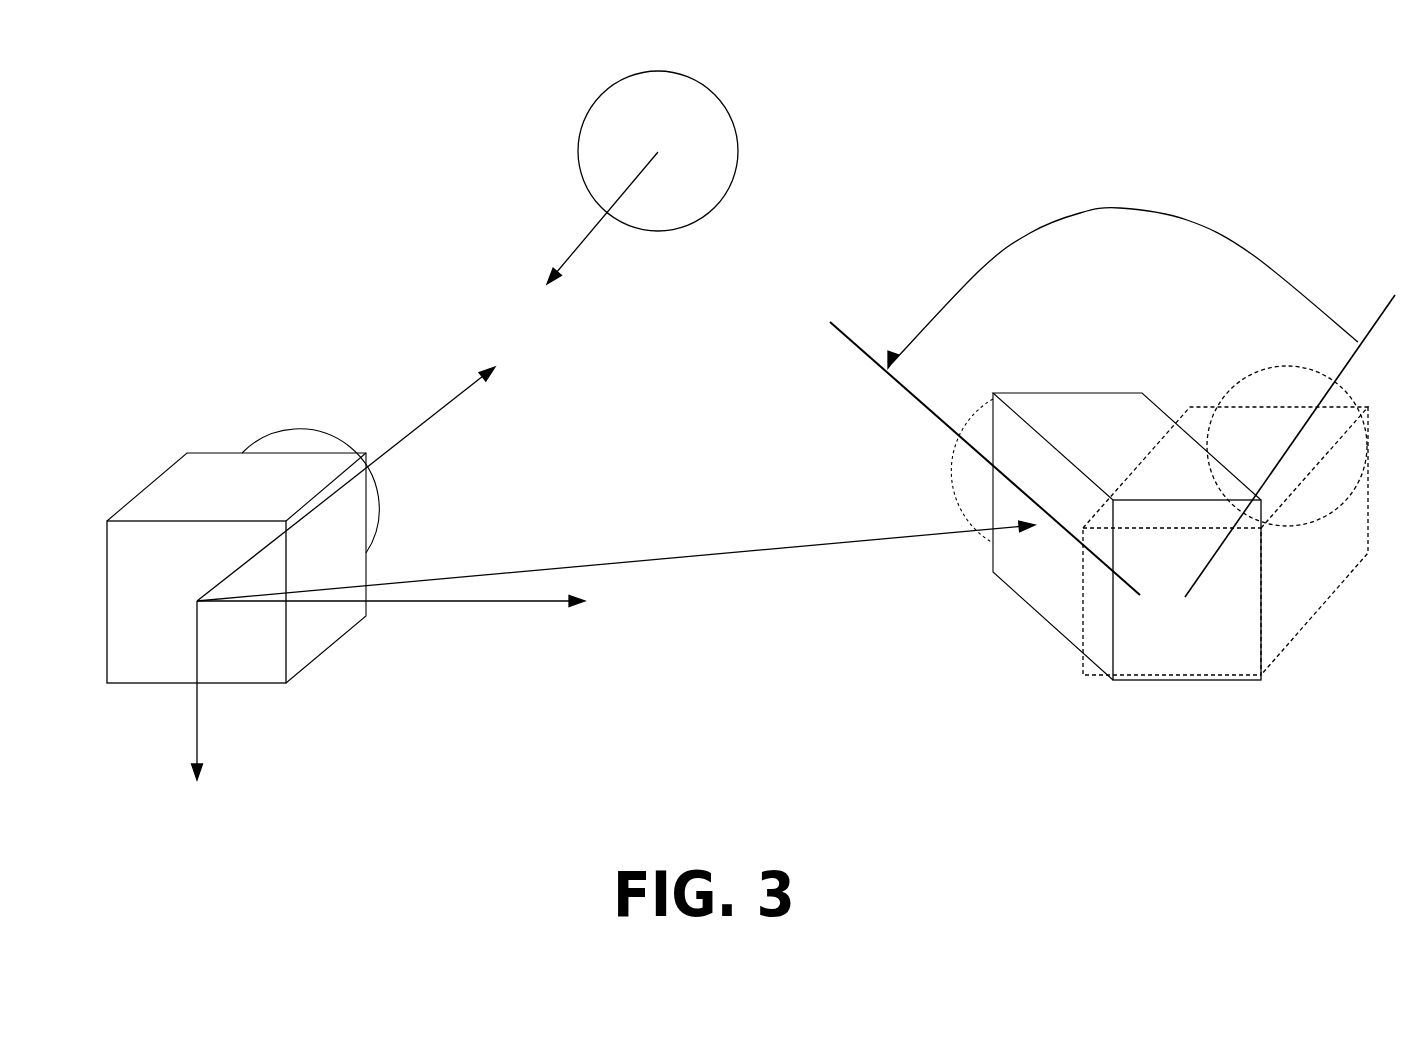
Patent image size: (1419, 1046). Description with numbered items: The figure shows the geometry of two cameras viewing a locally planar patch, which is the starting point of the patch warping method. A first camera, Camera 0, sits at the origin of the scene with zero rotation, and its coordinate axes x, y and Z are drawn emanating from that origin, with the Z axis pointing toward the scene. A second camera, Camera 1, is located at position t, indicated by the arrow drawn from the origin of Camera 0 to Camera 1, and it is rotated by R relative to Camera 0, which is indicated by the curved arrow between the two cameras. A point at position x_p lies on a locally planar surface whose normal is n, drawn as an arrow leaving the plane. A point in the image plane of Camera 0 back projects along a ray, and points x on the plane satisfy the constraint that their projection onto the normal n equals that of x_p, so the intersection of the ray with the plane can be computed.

The Camera 0 is at (243, 638).
The Camera 1 is at (1112, 571).
The position t is at (616, 561).
The rotation R is at (1123, 271).
The normal n is at (611, 224).
The Z axis Z is at (356, 472).
The point on the plane x is at (403, 603).
The y axis y is at (196, 709).